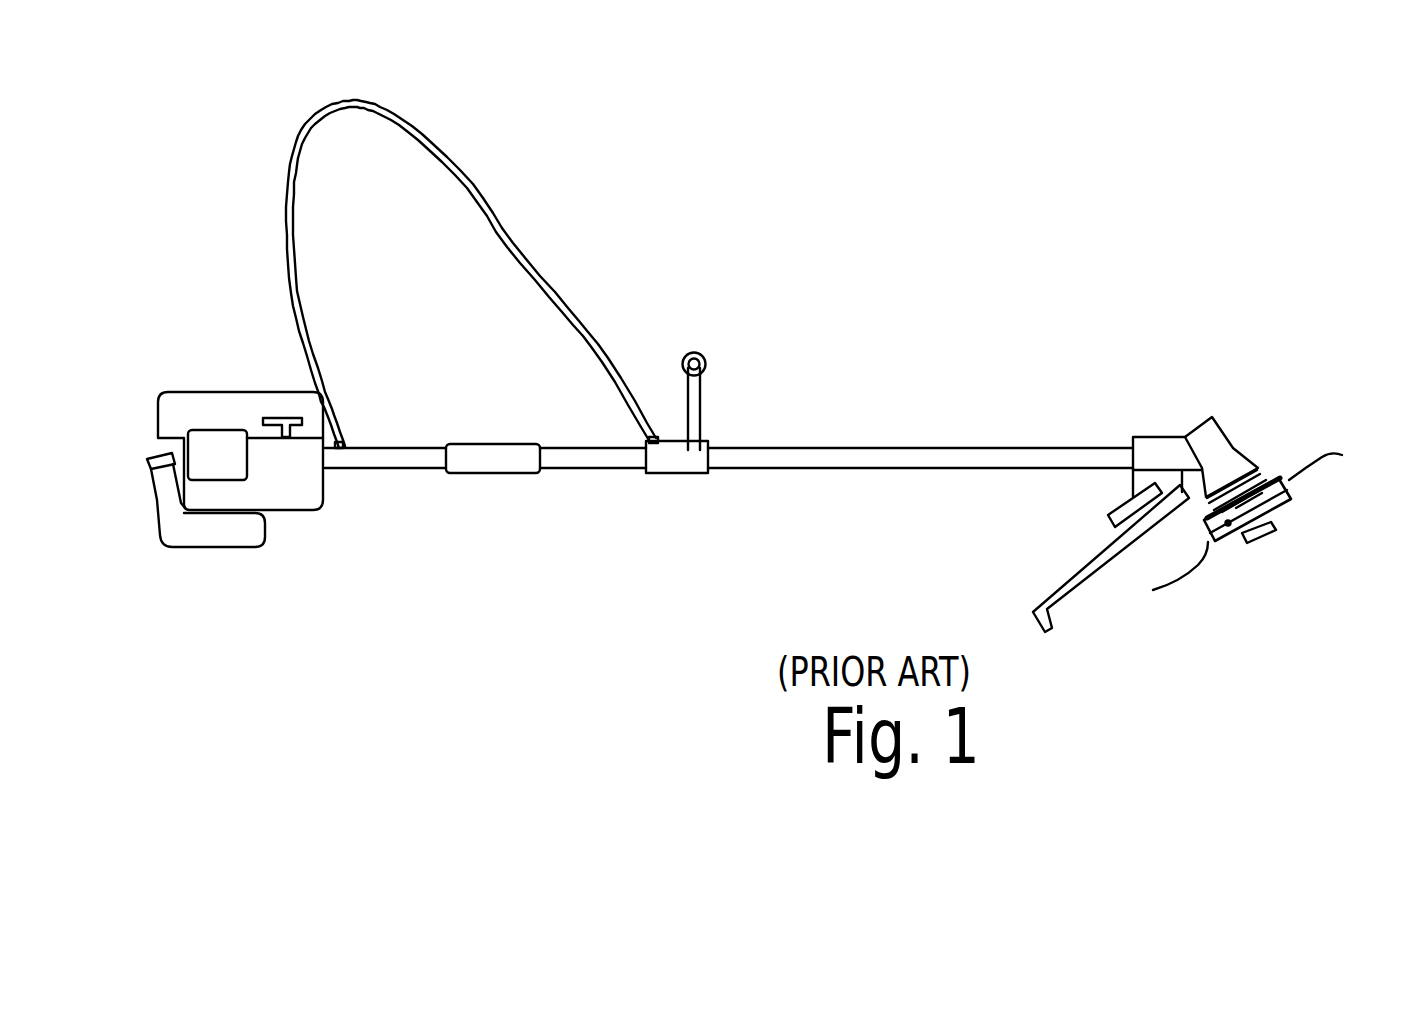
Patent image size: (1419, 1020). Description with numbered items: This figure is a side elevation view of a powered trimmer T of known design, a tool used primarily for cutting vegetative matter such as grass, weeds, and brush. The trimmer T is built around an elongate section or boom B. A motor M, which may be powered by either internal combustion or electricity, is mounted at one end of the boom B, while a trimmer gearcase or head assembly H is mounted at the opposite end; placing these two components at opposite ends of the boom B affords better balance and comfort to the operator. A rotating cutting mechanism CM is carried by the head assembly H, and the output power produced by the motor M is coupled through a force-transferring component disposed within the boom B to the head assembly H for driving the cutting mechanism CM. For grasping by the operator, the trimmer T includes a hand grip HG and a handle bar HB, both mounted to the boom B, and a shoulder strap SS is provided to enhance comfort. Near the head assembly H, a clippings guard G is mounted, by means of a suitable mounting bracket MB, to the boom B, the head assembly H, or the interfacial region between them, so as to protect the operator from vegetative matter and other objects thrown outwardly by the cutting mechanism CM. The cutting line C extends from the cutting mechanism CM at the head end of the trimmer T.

The powered trimmer T is at (974, 303).
The shoulder strap SS is at (468, 180).
The motor M is at (213, 392).
The boom B is at (862, 452).
The hand grip HG is at (485, 473).
The handle bar HB is at (704, 366).
The trimmer head assembly H is at (1189, 407).
The cutting mechanism CM is at (1302, 522).
The cutting line C is at (1176, 580).
The mounting bracket MB is at (1117, 510).
The clippings guard G is at (1053, 588).